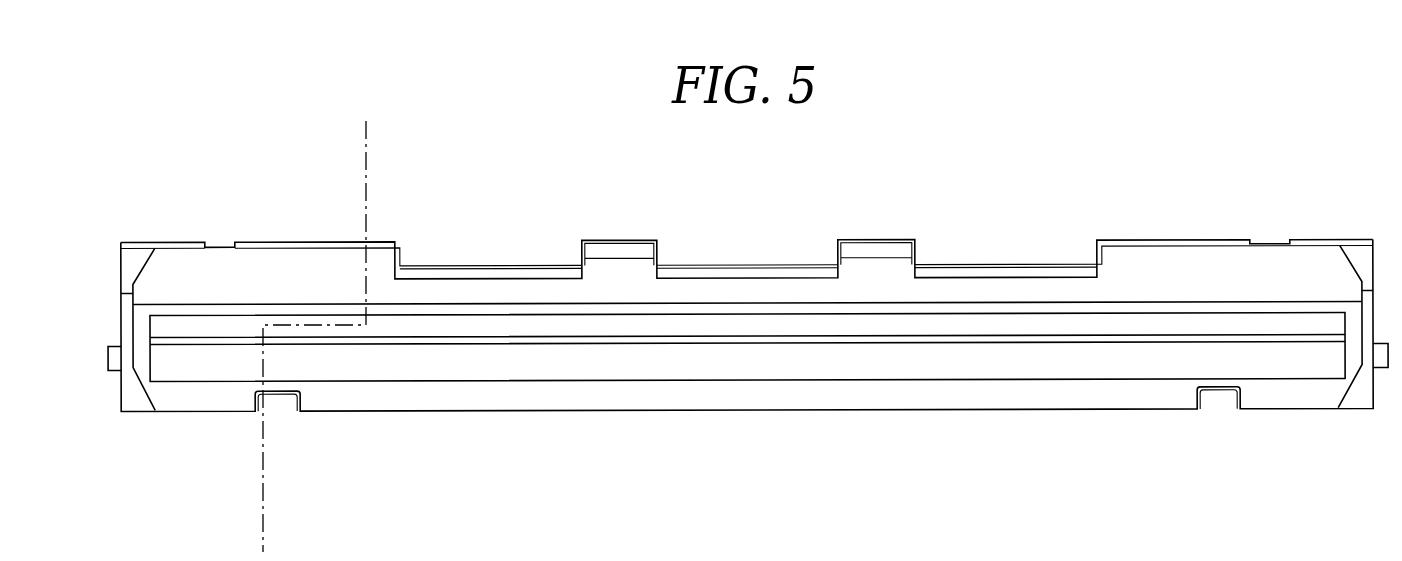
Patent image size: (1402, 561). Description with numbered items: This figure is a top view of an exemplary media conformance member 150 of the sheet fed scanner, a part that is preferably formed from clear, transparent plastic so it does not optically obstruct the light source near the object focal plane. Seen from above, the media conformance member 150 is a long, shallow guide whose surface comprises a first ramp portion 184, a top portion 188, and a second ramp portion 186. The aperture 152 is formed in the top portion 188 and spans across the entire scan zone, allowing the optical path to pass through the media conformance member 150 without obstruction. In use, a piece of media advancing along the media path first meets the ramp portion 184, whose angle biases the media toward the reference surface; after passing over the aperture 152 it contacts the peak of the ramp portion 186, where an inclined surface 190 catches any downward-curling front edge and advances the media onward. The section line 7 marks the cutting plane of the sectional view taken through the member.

The assembly / carrier 150 is at (748, 308).
The rail 152 is at (615, 329).
The top plate 184 is at (940, 272).
The bottom plate 186 is at (968, 415).
The end block 188 is at (1348, 312).
The slot 190 is at (862, 360).
The section line 7- 7 is at (366, 121).